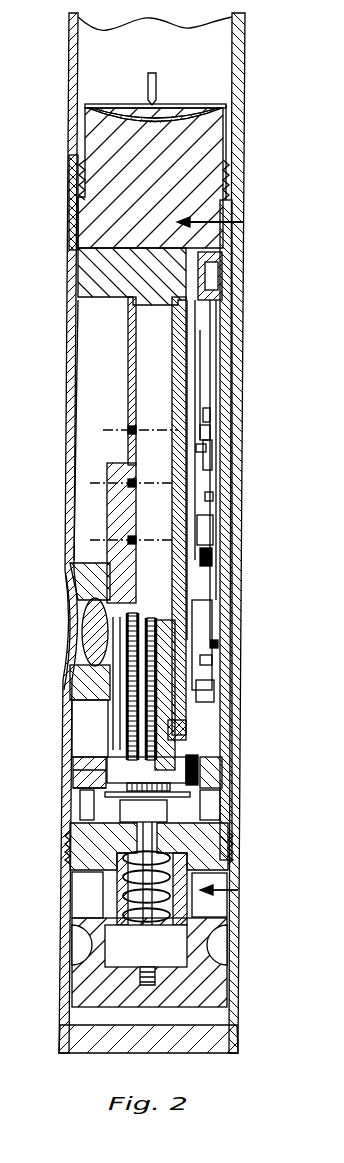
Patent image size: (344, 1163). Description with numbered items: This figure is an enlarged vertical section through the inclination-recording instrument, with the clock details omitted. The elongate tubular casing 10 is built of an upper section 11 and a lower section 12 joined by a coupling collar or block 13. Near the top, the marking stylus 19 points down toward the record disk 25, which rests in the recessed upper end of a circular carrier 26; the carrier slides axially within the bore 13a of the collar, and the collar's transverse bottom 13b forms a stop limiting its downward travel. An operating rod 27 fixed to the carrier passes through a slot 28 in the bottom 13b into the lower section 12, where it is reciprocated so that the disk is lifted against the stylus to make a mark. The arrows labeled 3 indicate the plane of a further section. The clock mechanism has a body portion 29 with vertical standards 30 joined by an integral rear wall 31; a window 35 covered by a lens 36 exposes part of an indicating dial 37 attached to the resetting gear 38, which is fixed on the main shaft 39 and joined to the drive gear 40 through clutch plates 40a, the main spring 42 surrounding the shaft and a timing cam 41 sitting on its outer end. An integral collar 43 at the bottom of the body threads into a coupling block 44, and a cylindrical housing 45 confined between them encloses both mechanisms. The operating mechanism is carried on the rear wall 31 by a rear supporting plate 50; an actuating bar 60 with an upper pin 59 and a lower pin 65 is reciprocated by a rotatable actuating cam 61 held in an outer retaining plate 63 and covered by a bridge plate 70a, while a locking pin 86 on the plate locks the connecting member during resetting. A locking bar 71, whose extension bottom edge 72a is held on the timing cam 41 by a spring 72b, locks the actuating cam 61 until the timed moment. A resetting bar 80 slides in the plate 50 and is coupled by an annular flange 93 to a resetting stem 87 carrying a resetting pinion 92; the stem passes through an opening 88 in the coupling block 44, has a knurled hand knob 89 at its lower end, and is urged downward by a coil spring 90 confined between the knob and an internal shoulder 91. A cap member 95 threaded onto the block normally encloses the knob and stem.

The tubular casing 10 is at (247, 72).
The upper section 11 is at (80, 105).
The lower section 12 is at (73, 320).
The coupling collar 13 is at (68, 232).
The bore 13a is at (80, 192).
The bottom 13b is at (112, 250).
The marking stylus 19 is at (147, 88).
The record disk 25 is at (210, 108).
The carrier 26 is at (210, 137).
The section arrow 3 is at (243, 222).
The operating rod 27 is at (197, 258).
The slot 28 is at (210, 283).
The body portion 29 is at (127, 320).
The vertical standards 30 is at (150, 382).
The rear wall 31 is at (172, 405).
The rear supporting plate 50 is at (200, 364).
The actuating bar 60 is at (208, 385).
The pin 59 is at (208, 430).
The bridge plate 70a is at (220, 432).
The outer retaining plate 63 is at (210, 462).
The locking pin 86 is at (203, 445).
The pin 65 is at (210, 500).
The actuating cam 61 is at (207, 523).
The resetting bar 80 is at (213, 557).
The cylindrical housing 45 is at (232, 582).
The locking bar 71 is at (207, 614).
The spring 72b is at (205, 652).
The bottom edge 72a is at (195, 660).
The resetting gear 38 is at (130, 612).
The main shaft 39 is at (180, 682).
The timing cam 41 is at (207, 694).
The main spring 42 is at (183, 727).
The drive gear 40 is at (187, 748).
The clutch plates 40a is at (146, 770).
The resetting pinion 92 is at (167, 782).
The window 35 is at (82, 603).
The lens 36 is at (90, 622).
The indicating dial 37 is at (110, 643).
The collar 43 is at (80, 766).
The annular flange 93 is at (77, 790).
The coupling block 44 is at (78, 823).
The opening 88 is at (72, 842).
The resetting stem 87 is at (233, 846).
The internal shoulder 91 is at (72, 862).
The coil spring 90 is at (110, 896).
The hand knob 89 is at (203, 977).
The cap member 95 is at (238, 1011).